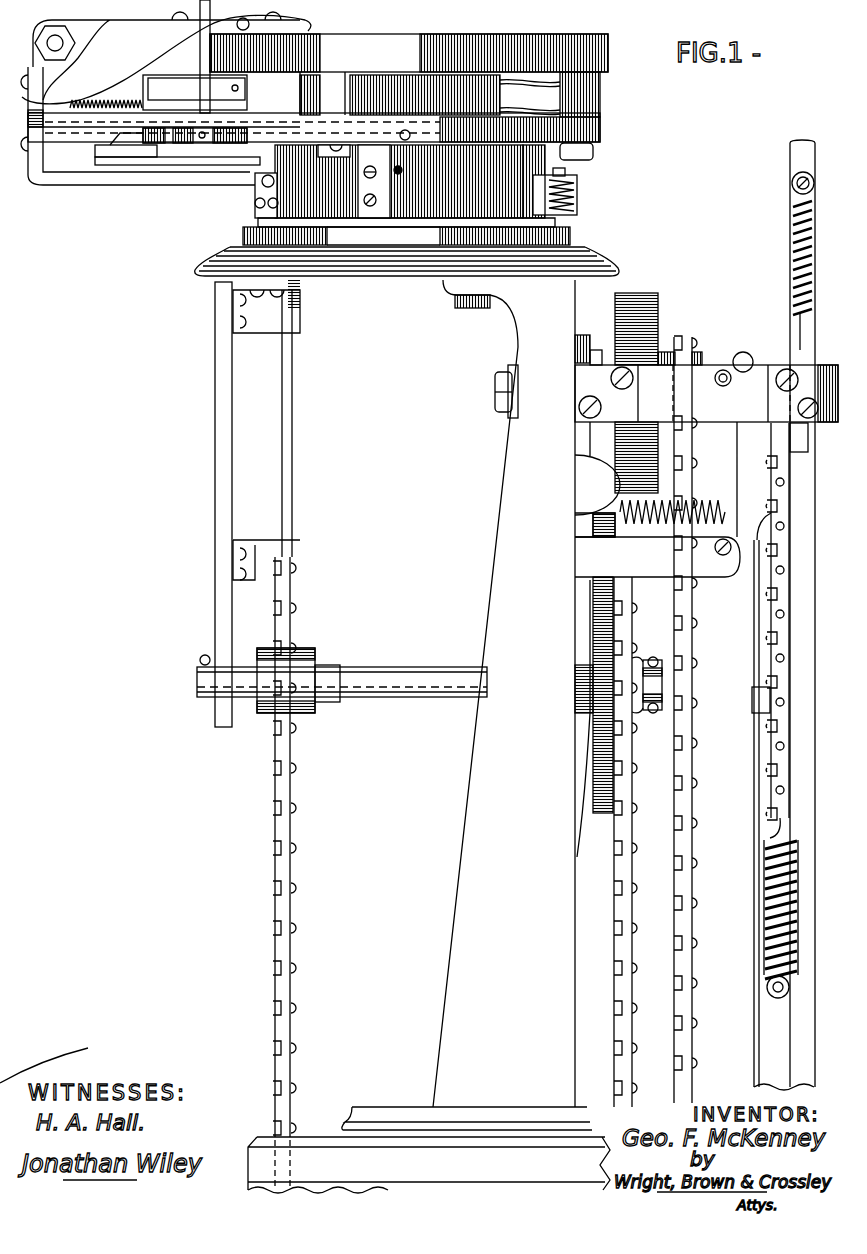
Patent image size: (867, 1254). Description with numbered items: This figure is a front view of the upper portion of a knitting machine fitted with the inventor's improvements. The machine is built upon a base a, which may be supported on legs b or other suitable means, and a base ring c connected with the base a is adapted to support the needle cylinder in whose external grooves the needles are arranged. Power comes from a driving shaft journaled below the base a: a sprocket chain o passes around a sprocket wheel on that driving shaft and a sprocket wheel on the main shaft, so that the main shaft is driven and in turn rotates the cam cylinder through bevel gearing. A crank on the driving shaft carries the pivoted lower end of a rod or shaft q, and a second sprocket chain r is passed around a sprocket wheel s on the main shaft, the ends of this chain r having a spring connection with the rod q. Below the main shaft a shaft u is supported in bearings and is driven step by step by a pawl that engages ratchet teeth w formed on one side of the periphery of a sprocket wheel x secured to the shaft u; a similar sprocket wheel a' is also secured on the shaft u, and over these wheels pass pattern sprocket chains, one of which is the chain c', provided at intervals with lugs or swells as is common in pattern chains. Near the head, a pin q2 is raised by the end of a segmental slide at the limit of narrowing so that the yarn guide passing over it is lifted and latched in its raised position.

The base a is at (429, 736).
The sprocket wheel a' is at (294, 665).
The legs b is at (296, 864).
The base ring c is at (407, 255).
The sprocket chain c' is at (637, 842).
The sprocket chain o is at (692, 810).
The rod or shaft q is at (783, 615).
The pin q2 is at (455, 95).
The sprocket chain r is at (788, 584).
The sprocket wheel s is at (810, 360).
The shaft u is at (342, 688).
The ratchet teeth w is at (605, 813).
The sprocket wheel x is at (630, 751).